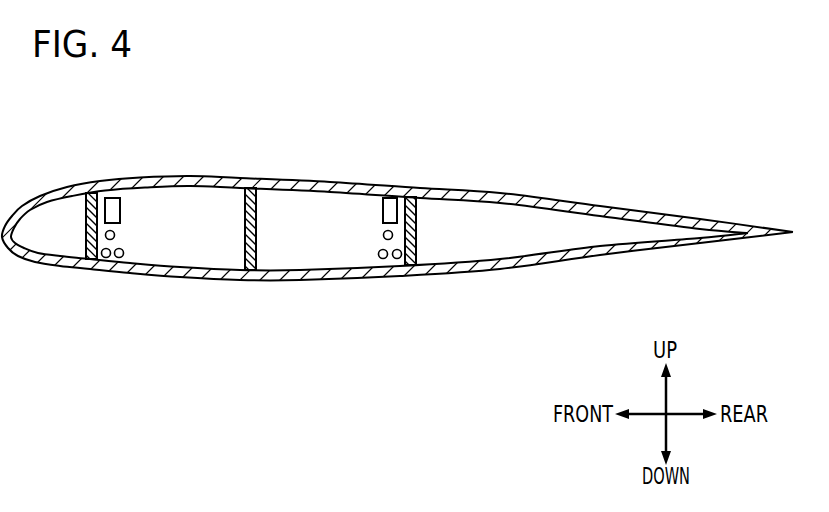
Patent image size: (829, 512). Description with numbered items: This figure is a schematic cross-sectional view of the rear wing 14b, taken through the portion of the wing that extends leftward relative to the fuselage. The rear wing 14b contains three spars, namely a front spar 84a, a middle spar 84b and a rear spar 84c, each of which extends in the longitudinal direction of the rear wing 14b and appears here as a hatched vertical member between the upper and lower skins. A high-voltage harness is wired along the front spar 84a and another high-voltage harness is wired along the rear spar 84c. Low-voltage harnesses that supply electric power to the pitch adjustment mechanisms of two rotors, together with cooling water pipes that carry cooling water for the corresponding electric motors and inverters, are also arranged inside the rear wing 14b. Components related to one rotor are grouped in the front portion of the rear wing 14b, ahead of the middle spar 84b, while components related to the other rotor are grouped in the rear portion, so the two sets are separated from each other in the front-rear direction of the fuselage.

The rear wing 14b is at (223, 106).
The front spar 84a is at (86, 241).
The middle spar 84b is at (245, 254).
The rear spar 84c is at (417, 243).